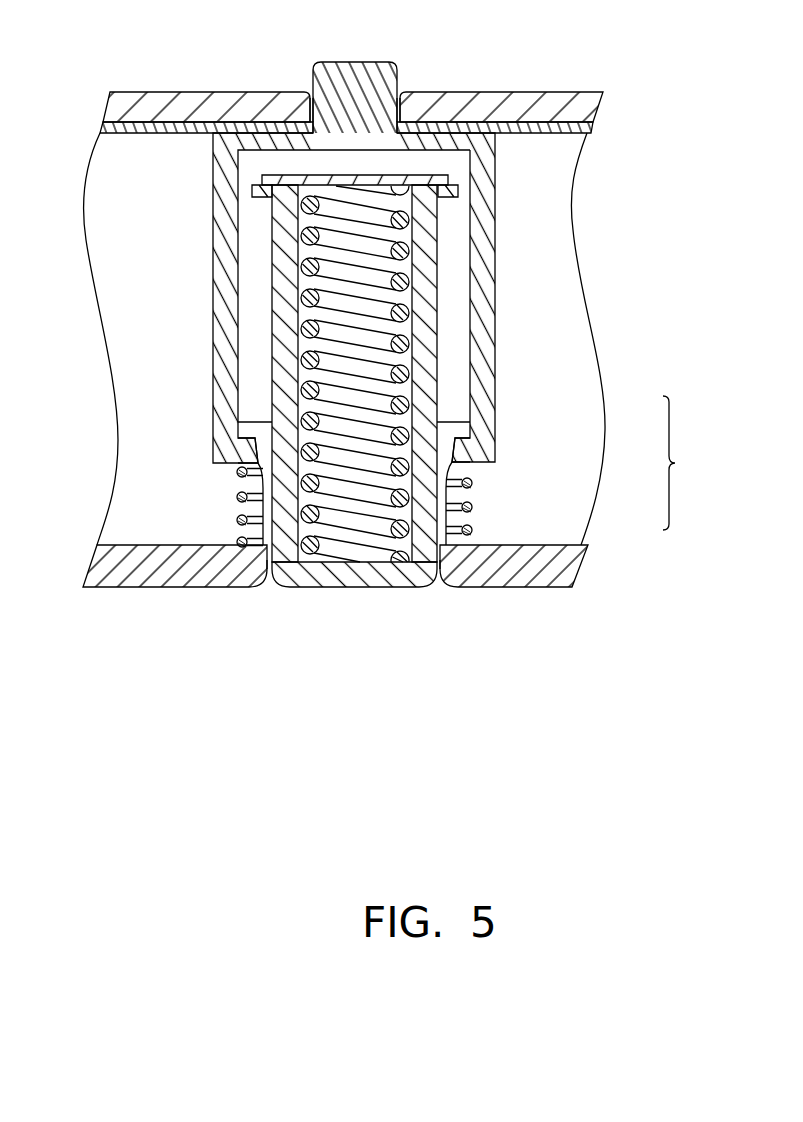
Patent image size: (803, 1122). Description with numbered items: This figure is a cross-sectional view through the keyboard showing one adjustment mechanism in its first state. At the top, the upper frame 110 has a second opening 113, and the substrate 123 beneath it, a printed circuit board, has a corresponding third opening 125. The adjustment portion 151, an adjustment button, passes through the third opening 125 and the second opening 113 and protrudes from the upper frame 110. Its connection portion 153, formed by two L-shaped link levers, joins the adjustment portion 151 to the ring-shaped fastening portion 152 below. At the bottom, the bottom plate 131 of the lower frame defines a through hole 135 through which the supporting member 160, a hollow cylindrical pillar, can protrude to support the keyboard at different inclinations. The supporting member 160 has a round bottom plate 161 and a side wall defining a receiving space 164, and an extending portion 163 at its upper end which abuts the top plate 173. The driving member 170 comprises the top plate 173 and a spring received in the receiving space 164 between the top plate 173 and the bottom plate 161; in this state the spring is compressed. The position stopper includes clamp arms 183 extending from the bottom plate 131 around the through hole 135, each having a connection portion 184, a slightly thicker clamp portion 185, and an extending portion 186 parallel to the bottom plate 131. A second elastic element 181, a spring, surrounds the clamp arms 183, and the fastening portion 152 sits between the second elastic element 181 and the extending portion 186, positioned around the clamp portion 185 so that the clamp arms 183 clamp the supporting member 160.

The upper frame 110 is at (188, 107).
The second opening 113 is at (310, 100).
The substrate 123 is at (148, 126).
The third opening 125 is at (399, 100).
The adjustment portion 151 is at (348, 77).
The connection portion 153 is at (230, 213).
The supporting member 160 is at (478, 356).
The fastening portion 152 is at (247, 450).
The extending portion 186 is at (465, 428).
The clamp arm 183 is at (691, 463).
The clamp portion 185 is at (440, 470).
The second elastic element 181 is at (240, 520).
The connection portion 184 is at (445, 532).
The top plate 173 is at (445, 178).
The extending portion 163 is at (455, 193).
The receiving space 164 is at (425, 303).
The driving member 170 is at (330, 552).
The bottom plate 161 is at (398, 572).
The bottom plate 131 is at (559, 562).
The through hole 135 is at (441, 590).